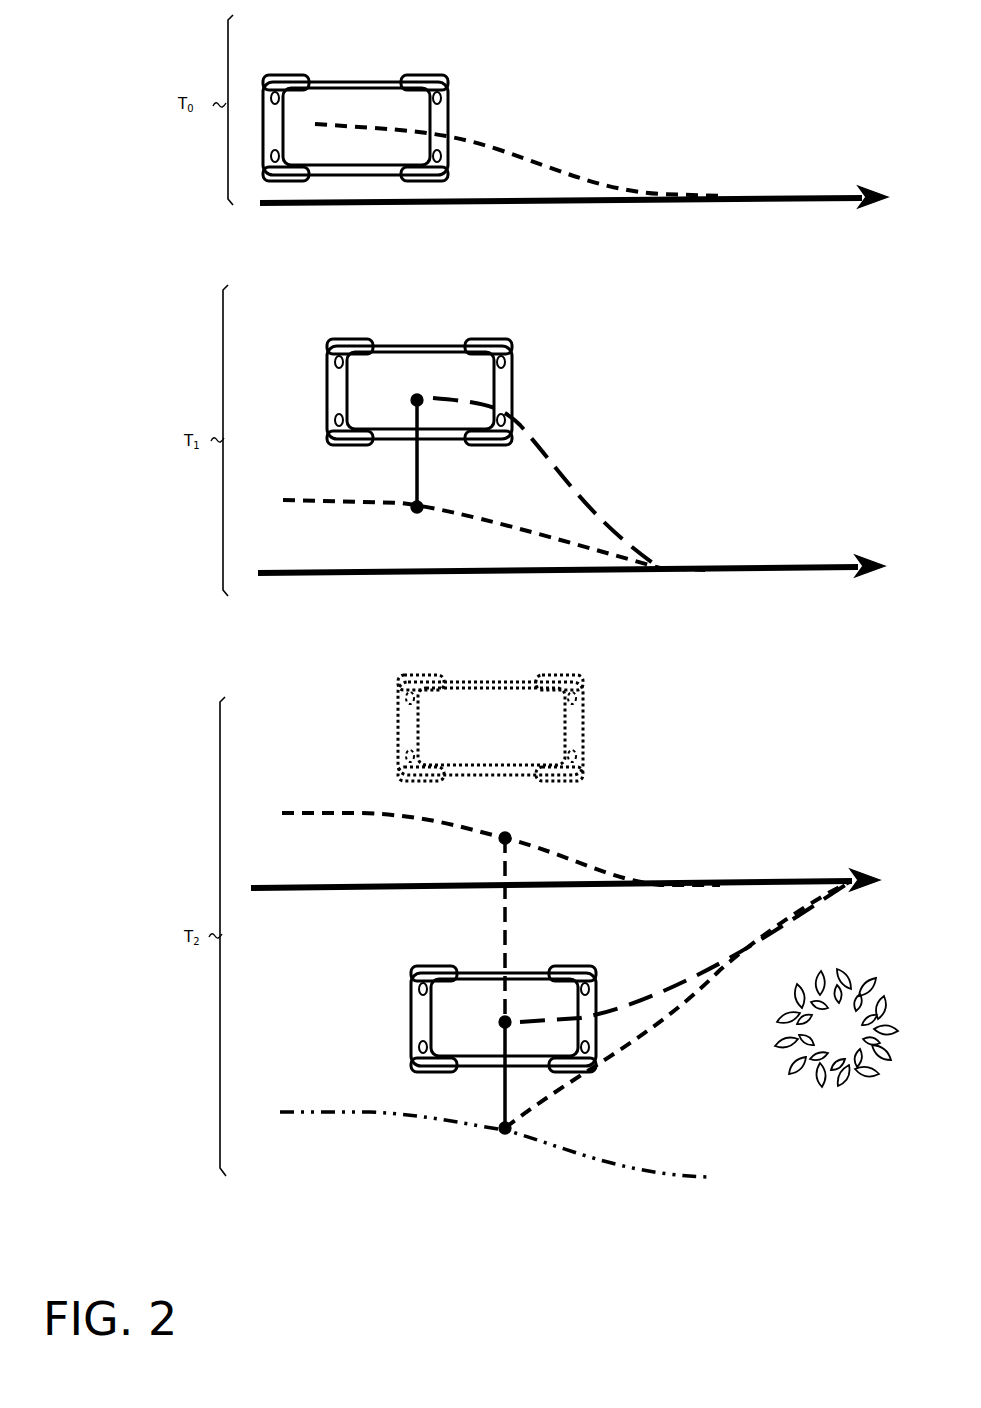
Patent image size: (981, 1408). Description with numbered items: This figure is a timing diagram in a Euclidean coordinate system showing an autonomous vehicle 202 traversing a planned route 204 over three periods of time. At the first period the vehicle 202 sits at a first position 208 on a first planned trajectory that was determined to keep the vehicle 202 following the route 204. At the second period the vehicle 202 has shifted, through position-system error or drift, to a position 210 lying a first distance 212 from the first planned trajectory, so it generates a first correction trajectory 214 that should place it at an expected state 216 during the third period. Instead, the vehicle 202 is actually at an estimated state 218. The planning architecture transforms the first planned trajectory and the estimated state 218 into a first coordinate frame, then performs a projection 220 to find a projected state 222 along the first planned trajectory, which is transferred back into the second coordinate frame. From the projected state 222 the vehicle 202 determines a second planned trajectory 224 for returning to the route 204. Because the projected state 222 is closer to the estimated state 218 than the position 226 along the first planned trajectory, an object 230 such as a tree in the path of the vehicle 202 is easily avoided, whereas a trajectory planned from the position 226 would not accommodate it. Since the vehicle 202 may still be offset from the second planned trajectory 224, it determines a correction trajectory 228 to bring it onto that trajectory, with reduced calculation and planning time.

The vehicle 202 is at (372, 53).
The planned route 204 is at (780, 197).
The first position 208 is at (370, 158).
The position 210 is at (436, 388).
The first distance 212 is at (420, 483).
The first correction trajectory 214 is at (550, 443).
The expected state 216 is at (510, 739).
The estimated state 218 is at (481, 1033).
The projection 220 is at (503, 1105).
The projected state 222 is at (505, 1135).
The second planned trajectory 224 is at (650, 1050).
The position 226 is at (510, 836).
The correction trajectory 228 is at (668, 992).
The object 230 is at (837, 1087).